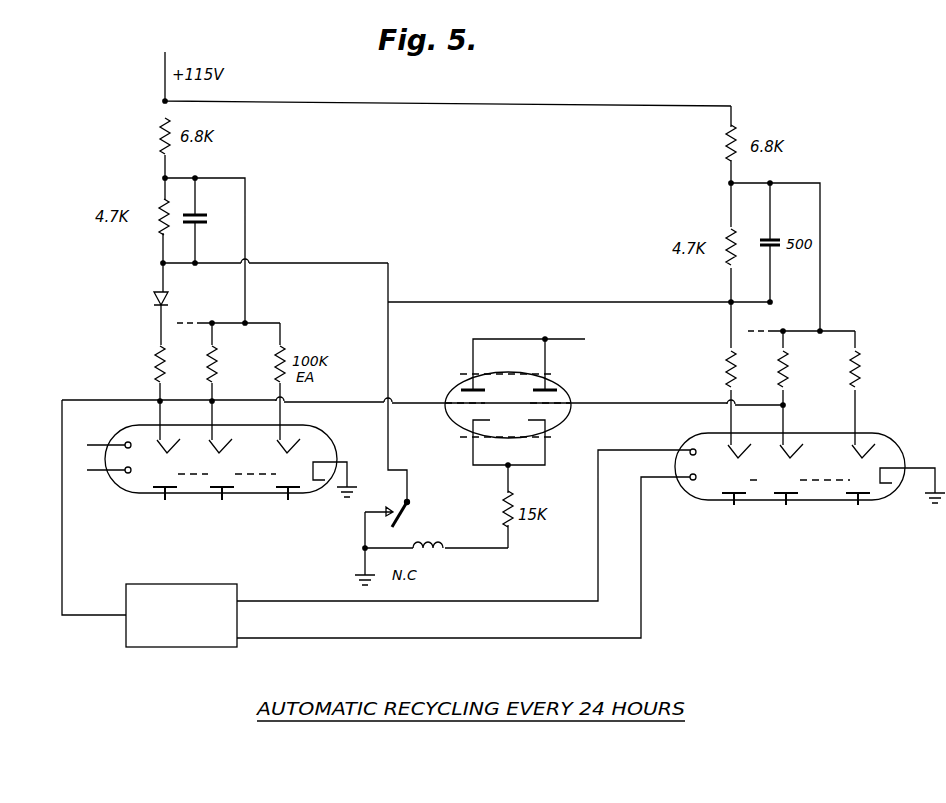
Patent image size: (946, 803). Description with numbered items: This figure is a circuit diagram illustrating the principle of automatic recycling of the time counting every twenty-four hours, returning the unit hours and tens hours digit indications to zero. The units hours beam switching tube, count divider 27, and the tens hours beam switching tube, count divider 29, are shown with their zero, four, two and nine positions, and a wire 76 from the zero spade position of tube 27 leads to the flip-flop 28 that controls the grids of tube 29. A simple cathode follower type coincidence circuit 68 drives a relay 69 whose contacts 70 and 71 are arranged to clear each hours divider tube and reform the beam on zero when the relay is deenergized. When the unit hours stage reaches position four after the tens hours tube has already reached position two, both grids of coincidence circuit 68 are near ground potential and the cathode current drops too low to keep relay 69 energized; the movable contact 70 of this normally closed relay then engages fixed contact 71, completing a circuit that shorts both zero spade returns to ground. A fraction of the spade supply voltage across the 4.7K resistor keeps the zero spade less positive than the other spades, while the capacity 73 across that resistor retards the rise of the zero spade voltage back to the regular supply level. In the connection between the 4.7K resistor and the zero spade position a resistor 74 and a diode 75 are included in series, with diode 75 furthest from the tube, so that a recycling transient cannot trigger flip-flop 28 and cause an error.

The count divider 27 is at (136, 497).
The flip-flop 28 is at (126, 635).
The count divider 29 is at (691, 498).
The coincidence circuit 68 is at (571, 392).
The relay 69 is at (440, 558).
The movable contact 70 is at (404, 521).
The fixed contact 71 is at (390, 506).
The capacity 73 is at (198, 217).
The resistor 74 is at (152, 361).
The diode 75 is at (152, 298).
The wire 76 is at (60, 525).